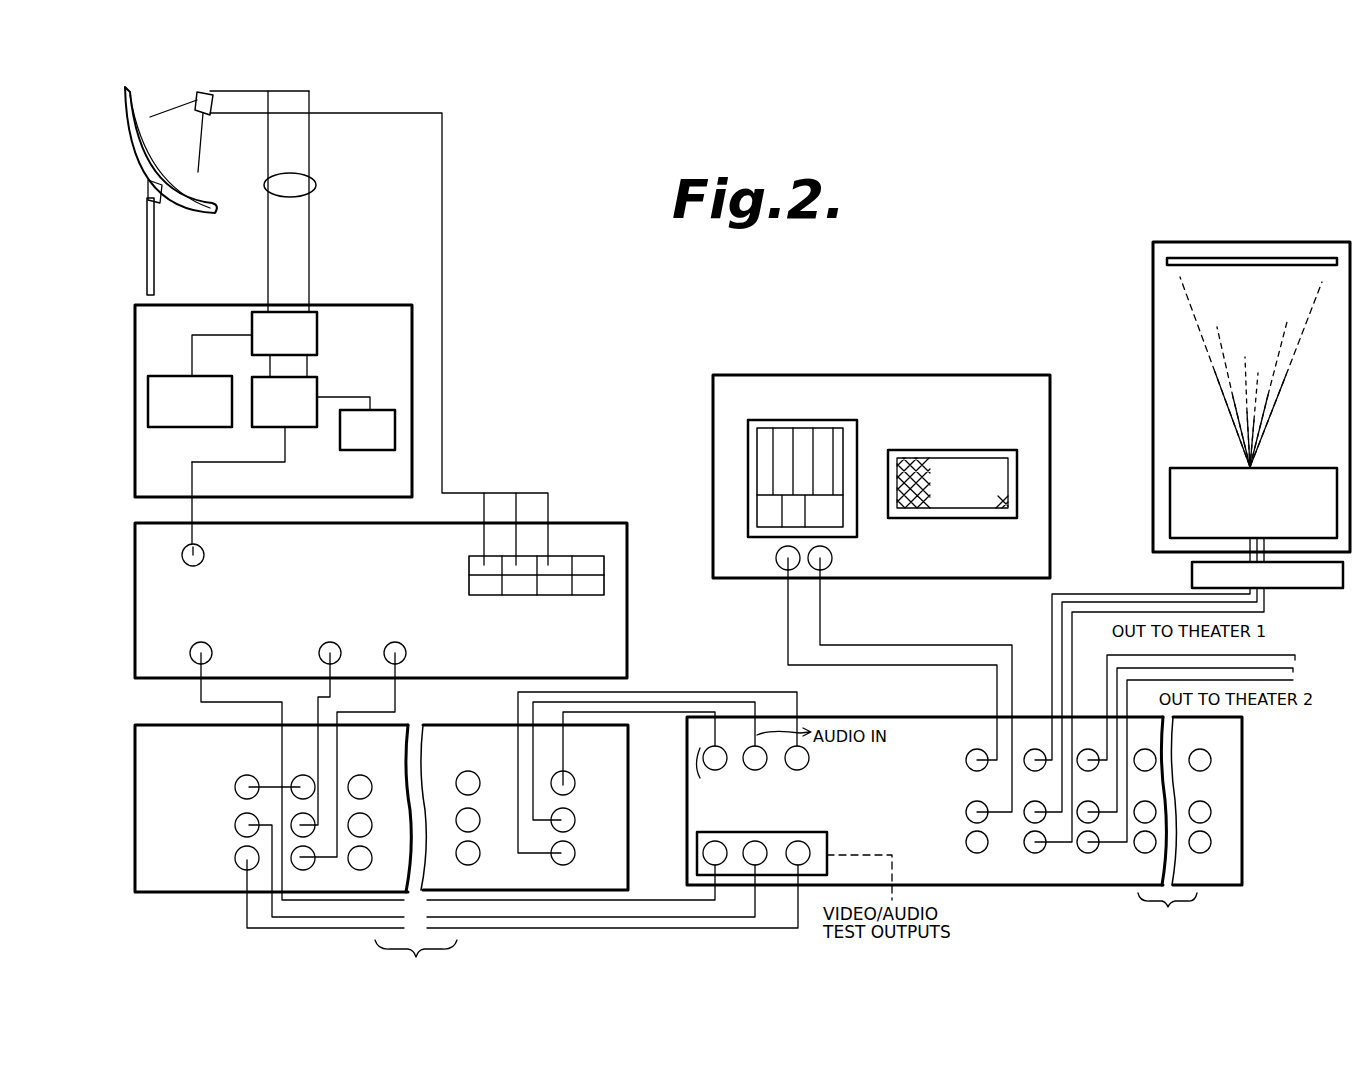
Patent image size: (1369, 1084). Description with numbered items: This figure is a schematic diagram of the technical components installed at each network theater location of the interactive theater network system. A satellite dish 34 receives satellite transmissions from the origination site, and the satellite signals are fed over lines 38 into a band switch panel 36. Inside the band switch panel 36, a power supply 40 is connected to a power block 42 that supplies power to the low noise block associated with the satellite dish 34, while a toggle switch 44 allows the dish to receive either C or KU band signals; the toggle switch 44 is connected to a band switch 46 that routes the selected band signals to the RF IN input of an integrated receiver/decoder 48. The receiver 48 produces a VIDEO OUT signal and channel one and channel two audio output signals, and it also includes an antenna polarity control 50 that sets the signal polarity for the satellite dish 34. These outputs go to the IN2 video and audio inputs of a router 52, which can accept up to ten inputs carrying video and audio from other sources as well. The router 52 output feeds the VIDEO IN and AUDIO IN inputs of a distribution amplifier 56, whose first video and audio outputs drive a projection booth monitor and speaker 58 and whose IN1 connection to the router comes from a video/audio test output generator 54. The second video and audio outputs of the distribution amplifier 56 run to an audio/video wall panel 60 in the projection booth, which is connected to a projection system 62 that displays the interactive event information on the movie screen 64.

The satellite dish 34 is at (140, 97).
The band switch panel 36 is at (135, 360).
The lines 38 is at (316, 184).
The power supply 40 is at (165, 376).
The power block 42 is at (317, 348).
The toggle switch 44 is at (394, 410).
The band switch 46 is at (317, 378).
The integrated receiver/decoder 48 is at (135, 523).
The antenna polarity control 50 is at (596, 559).
The router 52 is at (135, 725).
The video/audio test output generator 54 is at (697, 843).
The distribution amplifier 56 is at (1100, 885).
The projection booth monitor and speaker 58 is at (1050, 375).
The audio/video wall panel 60 is at (1343, 588).
The projection system 62 is at (1337, 468).
The movie screen 64 is at (1278, 258).